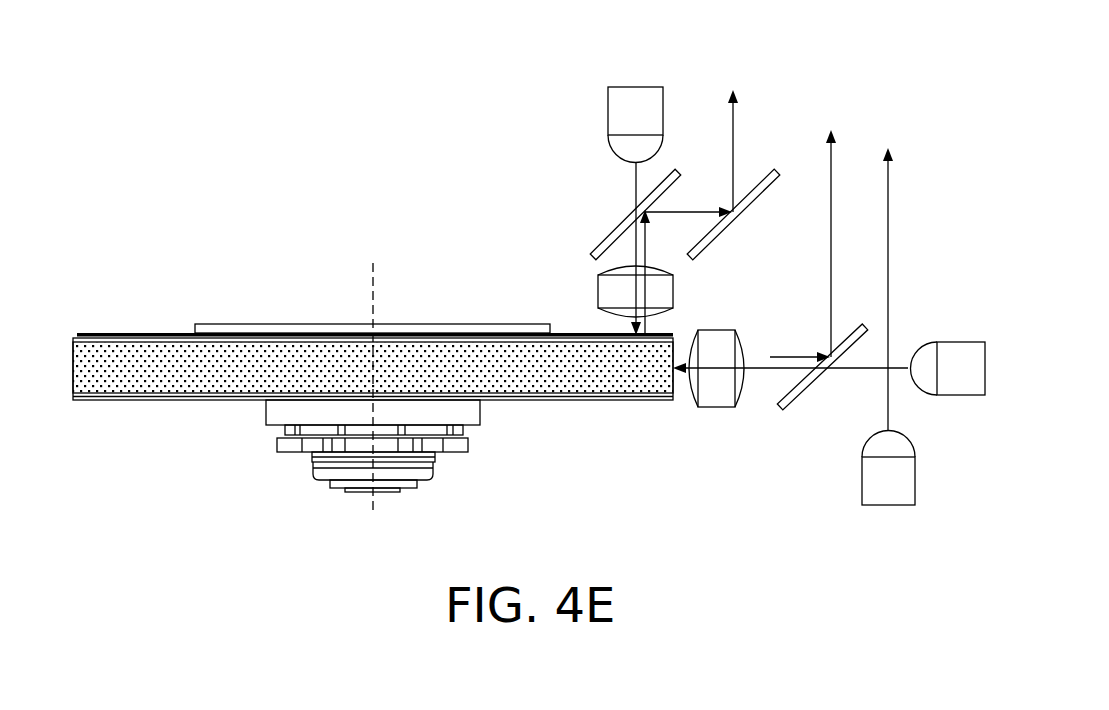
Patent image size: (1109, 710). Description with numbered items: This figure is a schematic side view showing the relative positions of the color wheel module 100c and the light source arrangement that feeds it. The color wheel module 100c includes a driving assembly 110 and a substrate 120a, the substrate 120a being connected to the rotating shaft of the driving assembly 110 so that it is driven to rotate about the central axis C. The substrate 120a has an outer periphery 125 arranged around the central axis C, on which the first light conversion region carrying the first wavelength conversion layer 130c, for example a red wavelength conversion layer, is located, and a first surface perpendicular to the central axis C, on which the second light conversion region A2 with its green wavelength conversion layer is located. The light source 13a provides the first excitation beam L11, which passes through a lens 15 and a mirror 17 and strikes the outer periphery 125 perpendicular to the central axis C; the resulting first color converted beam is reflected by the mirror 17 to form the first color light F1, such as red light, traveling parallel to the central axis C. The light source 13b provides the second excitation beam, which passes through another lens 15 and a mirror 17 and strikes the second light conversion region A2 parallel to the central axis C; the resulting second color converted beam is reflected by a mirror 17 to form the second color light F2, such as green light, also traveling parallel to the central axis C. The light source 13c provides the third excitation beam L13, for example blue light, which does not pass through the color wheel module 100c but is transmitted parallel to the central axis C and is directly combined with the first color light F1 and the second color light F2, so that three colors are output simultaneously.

The light source 13a is at (955, 387).
The light source 13b is at (617, 110).
The light source 13c is at (890, 498).
The color wheel module 100c is at (185, 278).
The substrate 120a is at (178, 402).
The first wavelength conversion layer 130c is at (543, 382).
The outer periphery 125 is at (618, 380).
The second light conversion region A2 is at (575, 331).
The central axis C is at (373, 373).
The driving assembly 110 is at (457, 413).
The lens 15 is at (608, 292).
The mirror 17 is at (677, 173).
The first excitation beam L11 is at (855, 372).
The third excitation beam L13 is at (889, 274).
The first color light F1 is at (832, 228).
The second color light F2 is at (732, 134).